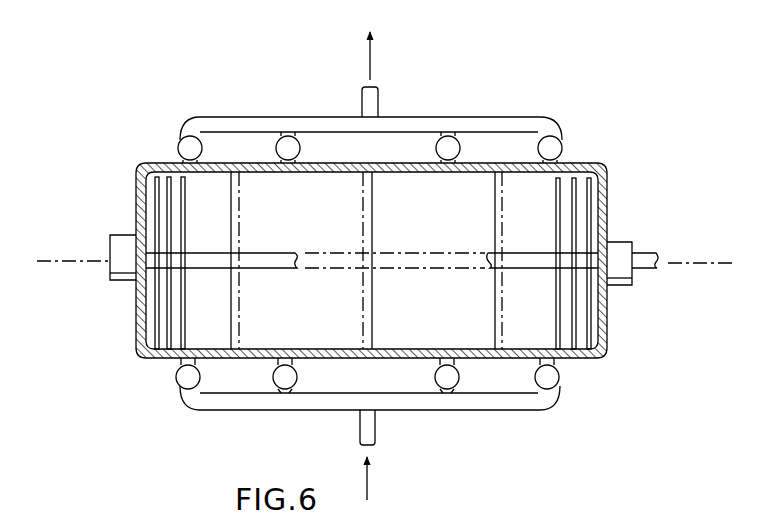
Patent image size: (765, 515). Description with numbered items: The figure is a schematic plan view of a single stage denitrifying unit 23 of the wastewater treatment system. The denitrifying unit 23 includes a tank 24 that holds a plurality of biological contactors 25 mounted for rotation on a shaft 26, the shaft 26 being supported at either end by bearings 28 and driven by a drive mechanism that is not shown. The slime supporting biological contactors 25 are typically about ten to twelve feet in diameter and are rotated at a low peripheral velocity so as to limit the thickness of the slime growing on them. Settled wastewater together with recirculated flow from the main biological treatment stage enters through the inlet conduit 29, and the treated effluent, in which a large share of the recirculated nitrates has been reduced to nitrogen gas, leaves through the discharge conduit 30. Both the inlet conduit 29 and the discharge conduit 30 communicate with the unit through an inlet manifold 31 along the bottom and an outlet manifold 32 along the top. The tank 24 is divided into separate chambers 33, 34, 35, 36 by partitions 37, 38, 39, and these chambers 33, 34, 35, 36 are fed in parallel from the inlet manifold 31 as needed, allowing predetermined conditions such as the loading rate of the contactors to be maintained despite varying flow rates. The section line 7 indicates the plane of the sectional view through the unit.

The section line 7- 7 is at (53, 265).
The denitrifying unit 23 is at (127, 153).
The tank 24 is at (135, 355).
The biological contactors 25 is at (165, 197).
The shaft 26 is at (297, 254).
The bearings 28 is at (108, 236).
The inlet conduit 29 is at (375, 440).
The discharge conduit 30 is at (376, 91).
The inlet manifold 31 is at (265, 410).
The outlet manifold 32 is at (270, 117).
The chamber 33 is at (207, 337).
The chamber 34 is at (313, 345).
The chamber 35 is at (417, 345).
The chamber 36 is at (525, 345).
The partition 37 is at (241, 299).
The partition 38 is at (373, 300).
The partition 39 is at (503, 300).